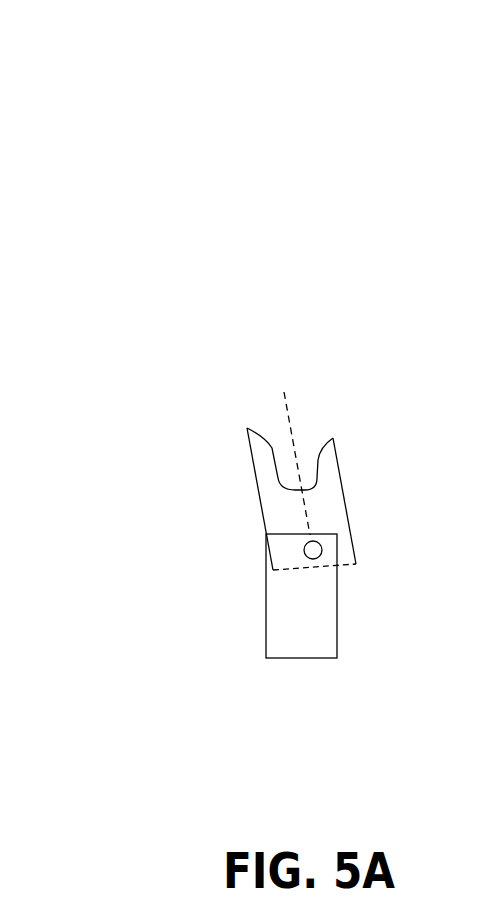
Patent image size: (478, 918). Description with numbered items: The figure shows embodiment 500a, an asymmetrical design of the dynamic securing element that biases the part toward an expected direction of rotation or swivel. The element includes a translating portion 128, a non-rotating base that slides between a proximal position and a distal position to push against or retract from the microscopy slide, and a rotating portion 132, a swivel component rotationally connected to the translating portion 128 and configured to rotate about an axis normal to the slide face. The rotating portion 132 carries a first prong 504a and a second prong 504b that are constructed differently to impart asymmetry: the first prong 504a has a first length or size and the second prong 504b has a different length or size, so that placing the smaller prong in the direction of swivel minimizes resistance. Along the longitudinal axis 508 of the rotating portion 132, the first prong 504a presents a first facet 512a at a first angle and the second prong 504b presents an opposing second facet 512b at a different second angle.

The embodiment 500a is at (145, 66).
The translating portion 128 is at (351, 606).
The rotating portion 132 is at (291, 471).
The first prong 504a is at (239, 459).
The second prong 504b is at (346, 449).
The longitudinal axis 508 is at (286, 451).
The first facet 512a is at (251, 416).
The second facet 512b is at (327, 430).